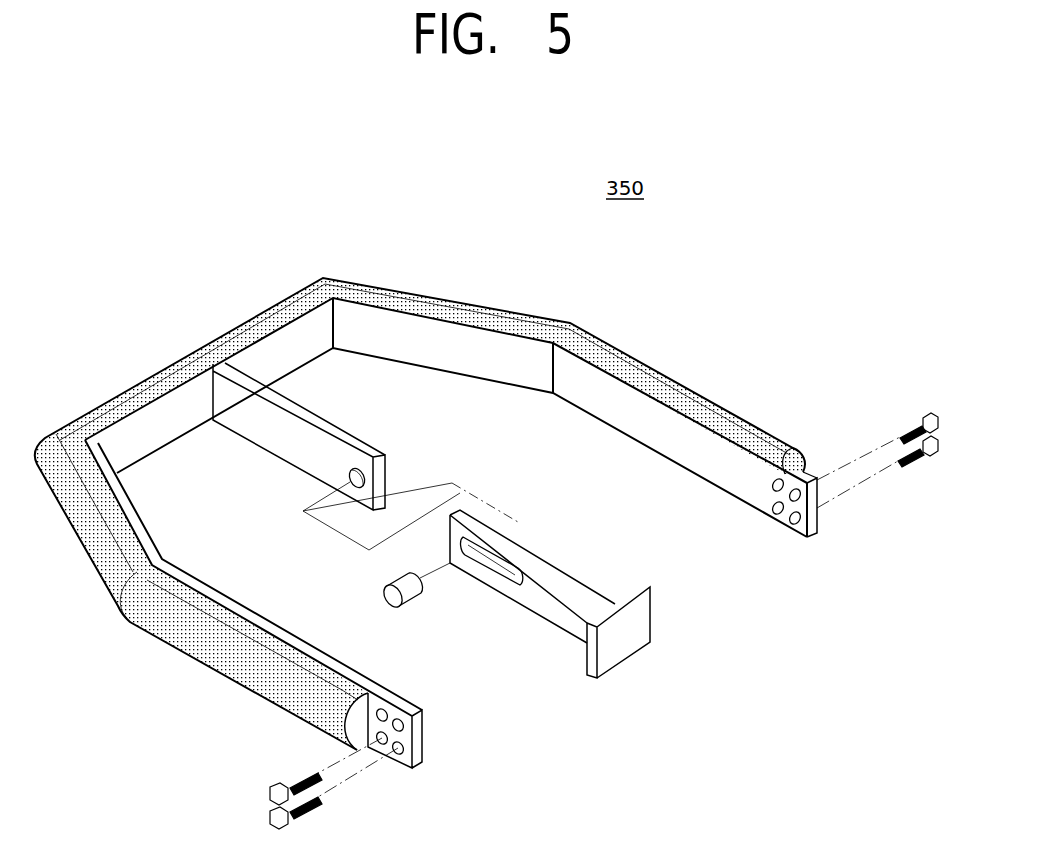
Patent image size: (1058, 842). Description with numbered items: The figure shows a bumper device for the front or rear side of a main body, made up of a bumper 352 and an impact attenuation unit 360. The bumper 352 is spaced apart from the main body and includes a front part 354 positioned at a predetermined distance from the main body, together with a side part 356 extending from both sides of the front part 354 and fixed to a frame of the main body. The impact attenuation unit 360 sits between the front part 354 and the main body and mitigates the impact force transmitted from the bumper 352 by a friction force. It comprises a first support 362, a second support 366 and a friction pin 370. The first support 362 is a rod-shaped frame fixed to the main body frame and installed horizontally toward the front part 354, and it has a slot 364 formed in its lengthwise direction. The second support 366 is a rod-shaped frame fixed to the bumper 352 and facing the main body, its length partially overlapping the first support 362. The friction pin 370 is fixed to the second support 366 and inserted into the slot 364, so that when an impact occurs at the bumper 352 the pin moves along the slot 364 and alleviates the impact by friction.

The bumper 352 is at (120, 393).
The front part 354 is at (185, 378).
The side part 356 is at (237, 608).
The impact attenuation unit 360 is at (412, 454).
The first support 362 is at (563, 572).
The slot 364 is at (477, 540).
The second support 366 is at (347, 440).
The friction pin 370 is at (413, 595).